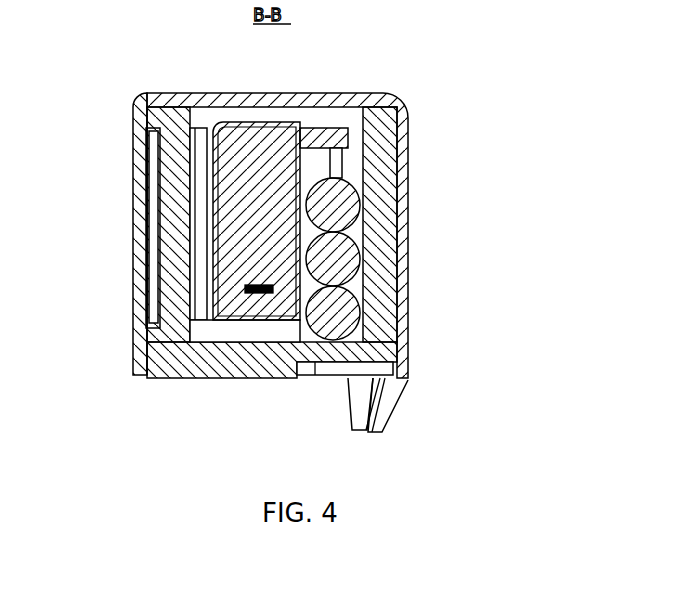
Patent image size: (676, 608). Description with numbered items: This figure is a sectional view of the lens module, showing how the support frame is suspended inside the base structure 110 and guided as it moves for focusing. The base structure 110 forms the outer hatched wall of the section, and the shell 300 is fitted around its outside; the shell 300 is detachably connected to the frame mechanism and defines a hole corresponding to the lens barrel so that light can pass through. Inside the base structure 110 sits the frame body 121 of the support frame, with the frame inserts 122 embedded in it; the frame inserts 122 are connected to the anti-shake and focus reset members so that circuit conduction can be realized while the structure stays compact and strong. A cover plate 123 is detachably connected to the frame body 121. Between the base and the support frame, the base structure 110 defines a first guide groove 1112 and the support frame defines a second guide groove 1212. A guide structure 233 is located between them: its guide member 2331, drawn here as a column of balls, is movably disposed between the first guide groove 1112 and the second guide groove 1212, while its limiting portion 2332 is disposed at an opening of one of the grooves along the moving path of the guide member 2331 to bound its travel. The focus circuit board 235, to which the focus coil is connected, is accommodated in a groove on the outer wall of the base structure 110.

The first guide groove 1112 is at (370, 95).
The shell 300 is at (143, 352).
The base structure 110 is at (395, 348).
The focus circuit board 235 is at (165, 212).
The frame body 121 is at (180, 158).
The cover plate 123 is at (222, 196).
The second guide groove 1212 is at (317, 162).
The frame inserts 122 is at (253, 295).
The guide structure 233 is at (434, 223).
The limiting portion 2332 is at (336, 146).
The guide member 2331 is at (347, 318).